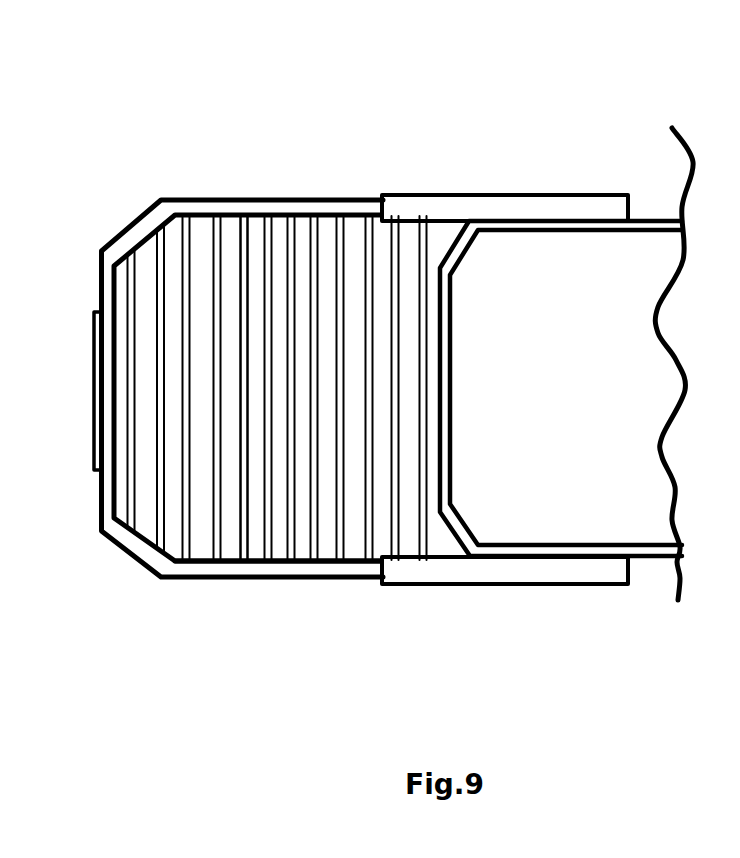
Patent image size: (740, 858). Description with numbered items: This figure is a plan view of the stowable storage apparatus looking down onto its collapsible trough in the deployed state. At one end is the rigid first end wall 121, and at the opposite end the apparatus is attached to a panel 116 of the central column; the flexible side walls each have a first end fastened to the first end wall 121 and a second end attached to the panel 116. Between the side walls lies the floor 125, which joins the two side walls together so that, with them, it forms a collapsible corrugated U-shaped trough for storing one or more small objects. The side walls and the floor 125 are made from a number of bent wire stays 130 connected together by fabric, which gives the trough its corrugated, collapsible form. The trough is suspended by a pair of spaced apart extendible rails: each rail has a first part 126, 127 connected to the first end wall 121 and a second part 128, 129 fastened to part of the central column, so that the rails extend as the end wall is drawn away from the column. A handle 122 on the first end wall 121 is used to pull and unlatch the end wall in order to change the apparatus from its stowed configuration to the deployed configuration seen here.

The panel 116 is at (452, 339).
The rigid first end wall 121 is at (148, 567).
The handle 122 is at (76, 484).
The floor 125 is at (203, 313).
The first part of extendible rail 126 is at (318, 578).
The first part of extendible rail 127 is at (308, 198).
The second part of extendible rail 128 is at (523, 585).
The second part of extendible rail 129 is at (522, 193).
The bent wire stays 130 is at (220, 347).